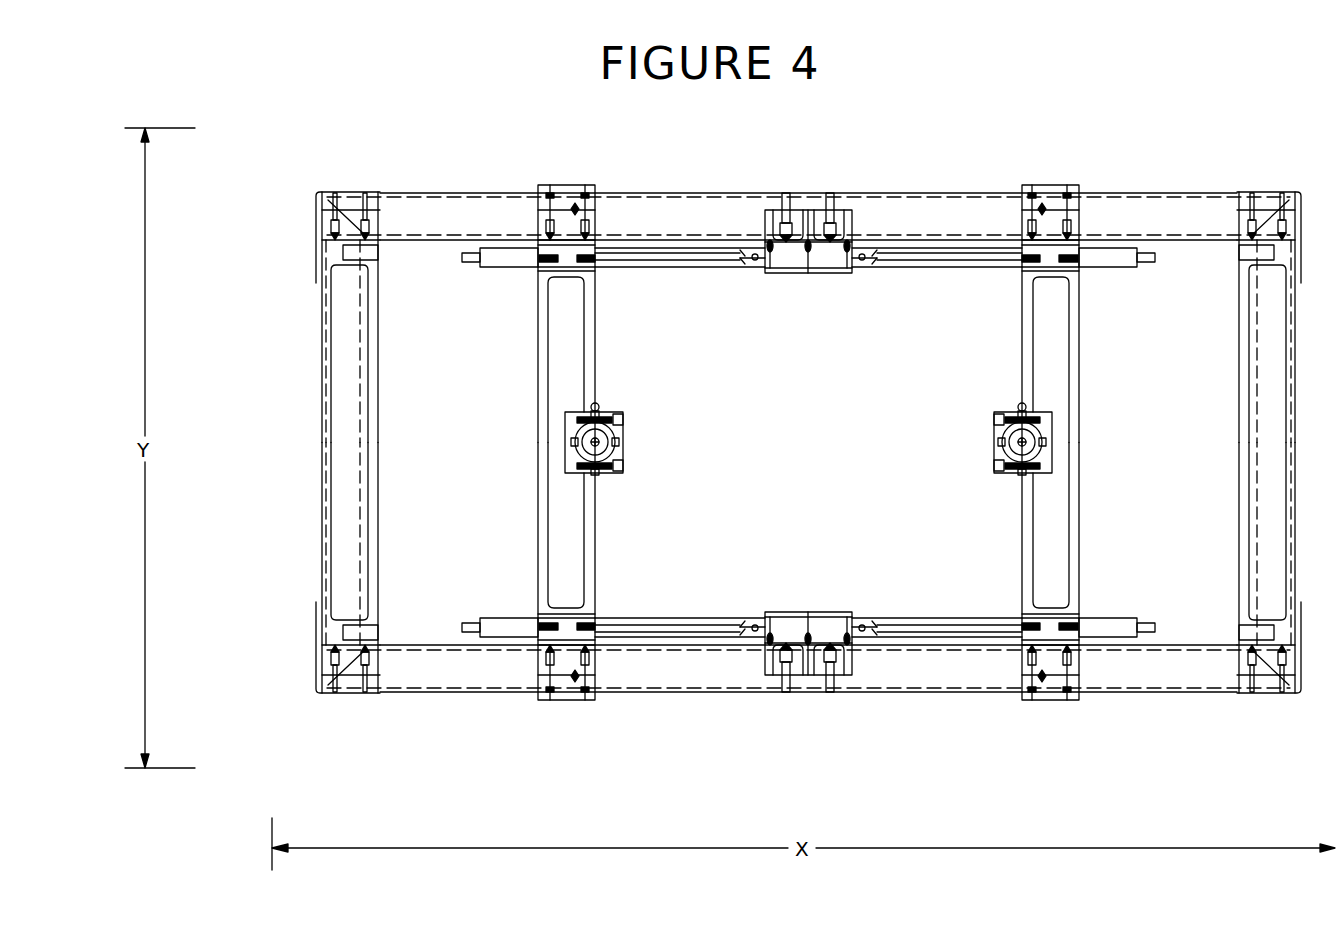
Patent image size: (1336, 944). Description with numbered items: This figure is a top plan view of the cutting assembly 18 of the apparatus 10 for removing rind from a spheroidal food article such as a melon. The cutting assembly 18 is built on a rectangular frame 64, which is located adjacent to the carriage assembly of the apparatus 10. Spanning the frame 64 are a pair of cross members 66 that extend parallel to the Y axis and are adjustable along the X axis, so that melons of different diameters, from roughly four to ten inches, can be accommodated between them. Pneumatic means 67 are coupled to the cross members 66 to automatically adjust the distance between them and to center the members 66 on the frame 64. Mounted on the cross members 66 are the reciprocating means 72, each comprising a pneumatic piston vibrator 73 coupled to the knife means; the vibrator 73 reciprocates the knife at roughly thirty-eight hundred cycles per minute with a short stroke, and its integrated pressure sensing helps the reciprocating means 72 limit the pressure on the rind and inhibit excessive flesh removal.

The apparatus 10 is at (808, 376).
The cutting assembly 18 is at (808, 382).
The rectangular frame 64 is at (808, 442).
The cross members 66 is at (811, 442).
The pneumatic means 67 is at (815, 442).
The reciprocating means 72 is at (808, 447).
The pneumatic piston vibrator 73 is at (808, 389).